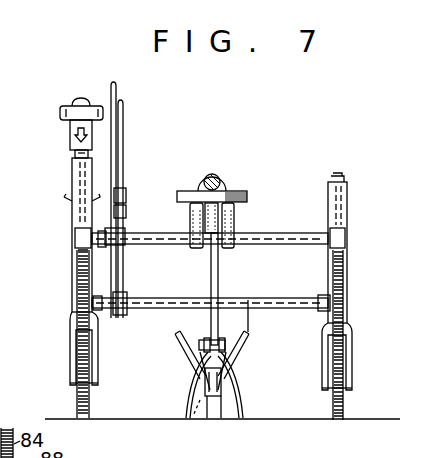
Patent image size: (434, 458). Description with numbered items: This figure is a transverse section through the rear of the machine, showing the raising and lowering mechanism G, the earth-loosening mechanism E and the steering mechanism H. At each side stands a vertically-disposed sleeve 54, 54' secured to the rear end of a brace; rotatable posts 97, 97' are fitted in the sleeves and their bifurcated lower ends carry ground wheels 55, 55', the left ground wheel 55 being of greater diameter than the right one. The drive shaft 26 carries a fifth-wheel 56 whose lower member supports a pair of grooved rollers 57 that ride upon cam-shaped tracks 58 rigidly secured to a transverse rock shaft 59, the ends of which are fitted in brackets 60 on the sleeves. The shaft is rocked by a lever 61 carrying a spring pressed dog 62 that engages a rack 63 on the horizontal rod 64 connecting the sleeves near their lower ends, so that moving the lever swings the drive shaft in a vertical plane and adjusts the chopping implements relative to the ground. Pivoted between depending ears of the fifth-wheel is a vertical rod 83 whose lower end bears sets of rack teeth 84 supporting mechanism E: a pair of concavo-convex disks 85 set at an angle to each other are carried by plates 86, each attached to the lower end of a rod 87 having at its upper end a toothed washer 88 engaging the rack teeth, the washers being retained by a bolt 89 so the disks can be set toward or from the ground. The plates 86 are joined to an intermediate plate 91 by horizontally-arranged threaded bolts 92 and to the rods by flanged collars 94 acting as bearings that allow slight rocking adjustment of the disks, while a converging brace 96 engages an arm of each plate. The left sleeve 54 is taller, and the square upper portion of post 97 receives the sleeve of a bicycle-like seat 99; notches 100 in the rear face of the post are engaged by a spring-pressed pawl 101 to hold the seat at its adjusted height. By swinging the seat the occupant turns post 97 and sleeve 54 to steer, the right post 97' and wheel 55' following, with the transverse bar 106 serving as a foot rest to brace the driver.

The drive shaft 26 is at (214, 174).
The left hand sleeve 54 is at (58, 235).
The right hand sleeve 54' is at (361, 248).
The left hand ground wheel 55 is at (104, 334).
The right hand ground wheel 55' is at (365, 335).
The fifth-wheel 56 is at (240, 191).
The grooved rollers 57 is at (190, 215).
The cam-shaped tracks 58 is at (214, 249).
The rock shaft 59 is at (297, 244).
The brackets 60 is at (75, 239).
The lever 61 is at (113, 82).
The spring pressed dog 62 is at (124, 190).
The rack 63 is at (126, 211).
The horizontal rod 64 is at (135, 306).
The vertical rod 83 is at (211, 290).
The rack teeth 84 is at (218, 344).
The concavo-convex disks 85 is at (187, 400).
The plates 86 is at (193, 416).
The rod 87 is at (222, 382).
The toothed washer 88 is at (210, 343).
The bolt 89 is at (200, 344).
The plate 91 is at (223, 418).
The threaded bolts 92 is at (208, 418).
The flanged collars 94 is at (221, 390).
The brace 96 is at (248, 300).
The post 97 is at (56, 165).
The right hand post 97' is at (359, 356).
The seat 99 is at (70, 106).
The notches 100 is at (119, 135).
The spring-pressed pawl 101 is at (70, 126).
The bar 106 is at (66, 201).
The vertically movable disks and operating devices E is at (166, 383).
The mechanism for raising and lowering the drive shaft G is at (233, 218).
The steering mechanism H is at (84, 95).